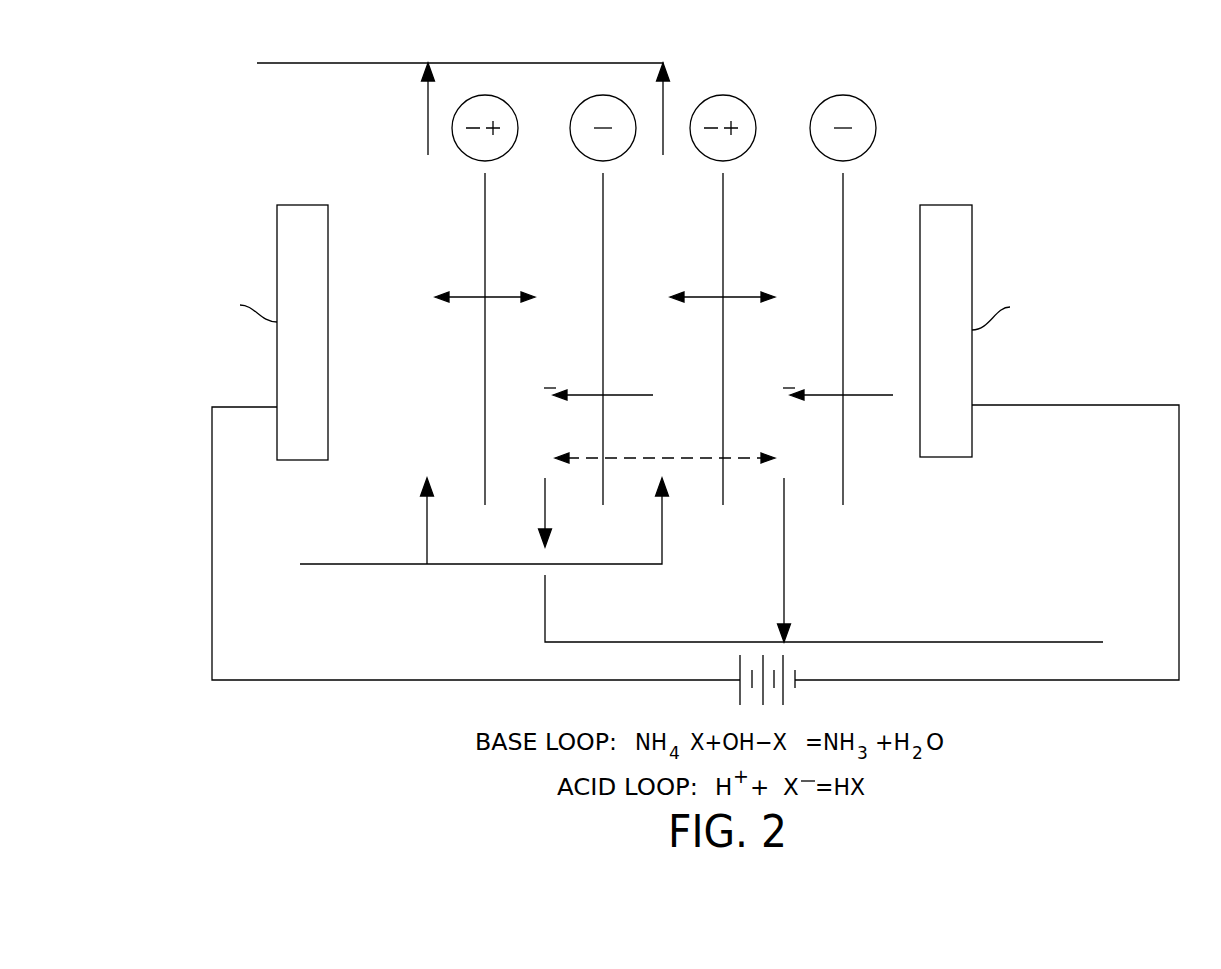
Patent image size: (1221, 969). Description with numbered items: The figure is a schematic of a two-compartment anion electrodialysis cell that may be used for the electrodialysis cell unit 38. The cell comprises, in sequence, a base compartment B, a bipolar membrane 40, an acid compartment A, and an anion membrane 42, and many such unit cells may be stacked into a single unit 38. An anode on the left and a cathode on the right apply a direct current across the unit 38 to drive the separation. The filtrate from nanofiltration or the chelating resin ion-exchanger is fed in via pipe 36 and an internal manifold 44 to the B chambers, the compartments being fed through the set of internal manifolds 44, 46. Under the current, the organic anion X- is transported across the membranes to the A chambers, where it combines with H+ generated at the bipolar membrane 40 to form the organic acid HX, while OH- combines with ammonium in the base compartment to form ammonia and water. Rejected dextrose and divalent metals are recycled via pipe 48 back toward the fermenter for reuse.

The pipe 36 is at (330, 564).
The electrodialysis cell unit 38 is at (930, 113).
The bipolar membrane 40 is at (485, 190).
The anion membrane 42 is at (603, 190).
The internal manifold 44 is at (505, 564).
The internal manifold 46 is at (620, 63).
The pipe 48 is at (298, 67).